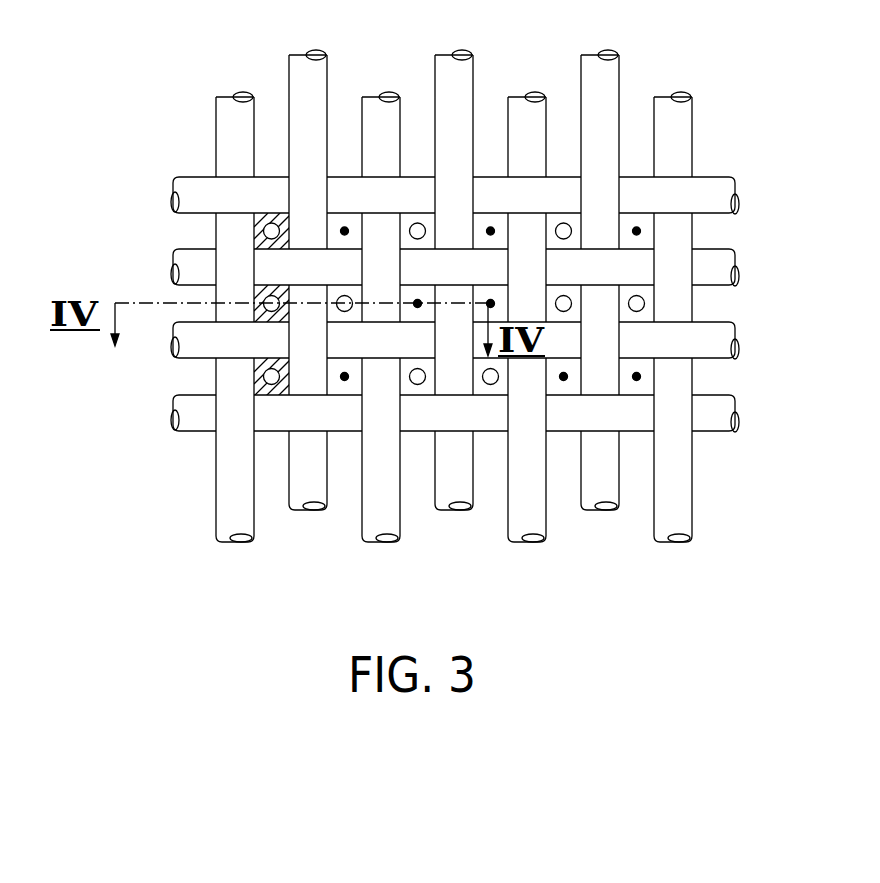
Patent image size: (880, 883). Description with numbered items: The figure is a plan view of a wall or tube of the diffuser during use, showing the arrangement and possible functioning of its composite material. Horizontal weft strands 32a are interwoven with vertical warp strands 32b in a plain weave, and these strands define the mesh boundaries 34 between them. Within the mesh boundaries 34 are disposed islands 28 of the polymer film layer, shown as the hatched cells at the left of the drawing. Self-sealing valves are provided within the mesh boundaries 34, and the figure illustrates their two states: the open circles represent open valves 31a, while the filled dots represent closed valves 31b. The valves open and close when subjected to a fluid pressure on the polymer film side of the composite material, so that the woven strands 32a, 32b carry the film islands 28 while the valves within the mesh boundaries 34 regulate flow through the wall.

The island 28 is at (260, 214).
The open valve 31a is at (270, 382).
The closed valve 31b is at (345, 381).
The weft strand 32a is at (717, 345).
The warp strand 32b is at (304, 70).
The mesh boundary 34 is at (258, 228).